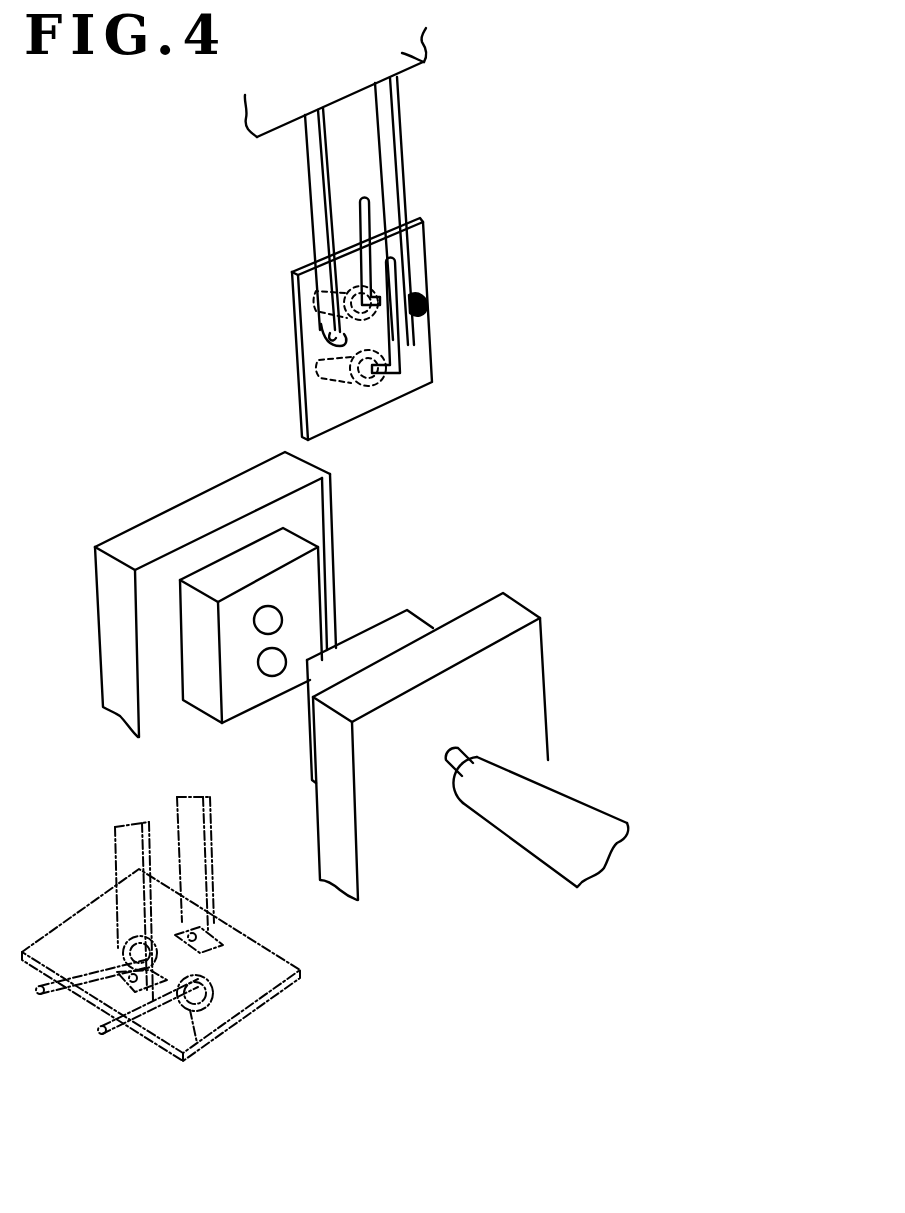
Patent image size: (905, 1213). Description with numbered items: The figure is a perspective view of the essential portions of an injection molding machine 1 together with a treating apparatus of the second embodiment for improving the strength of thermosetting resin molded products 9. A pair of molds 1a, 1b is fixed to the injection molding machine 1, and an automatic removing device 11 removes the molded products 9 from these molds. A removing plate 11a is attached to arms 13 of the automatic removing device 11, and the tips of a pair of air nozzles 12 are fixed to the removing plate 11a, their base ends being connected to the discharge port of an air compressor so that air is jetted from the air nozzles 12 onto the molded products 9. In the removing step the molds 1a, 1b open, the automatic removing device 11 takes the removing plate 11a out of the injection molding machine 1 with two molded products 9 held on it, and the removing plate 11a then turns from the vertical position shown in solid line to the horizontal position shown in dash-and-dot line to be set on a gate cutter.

The injection molding machine 1 is at (459, 589).
The mold 1a is at (283, 550).
The mold 1b is at (392, 630).
The molded products 9 is at (312, 292).
The automatic removing device 11 is at (424, 62).
The removing plate 11a is at (420, 251).
The air nozzles 12 is at (363, 221).
The arms 13 is at (317, 156).